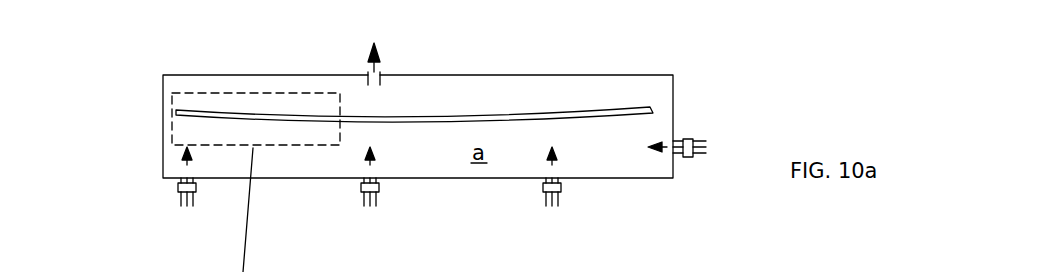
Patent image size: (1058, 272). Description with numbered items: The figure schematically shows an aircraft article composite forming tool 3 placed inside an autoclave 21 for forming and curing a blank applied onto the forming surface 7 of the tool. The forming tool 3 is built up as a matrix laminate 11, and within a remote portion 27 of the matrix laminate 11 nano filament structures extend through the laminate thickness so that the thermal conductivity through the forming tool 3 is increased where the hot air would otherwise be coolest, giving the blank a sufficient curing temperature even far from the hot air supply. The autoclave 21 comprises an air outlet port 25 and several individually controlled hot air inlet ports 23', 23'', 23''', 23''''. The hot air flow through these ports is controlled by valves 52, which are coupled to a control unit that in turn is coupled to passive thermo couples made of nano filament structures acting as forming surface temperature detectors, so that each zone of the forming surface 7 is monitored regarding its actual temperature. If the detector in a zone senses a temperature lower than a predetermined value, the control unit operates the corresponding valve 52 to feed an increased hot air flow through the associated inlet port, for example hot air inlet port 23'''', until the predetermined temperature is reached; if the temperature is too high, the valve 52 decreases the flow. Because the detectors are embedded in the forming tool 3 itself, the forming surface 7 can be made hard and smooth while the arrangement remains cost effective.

The aircraft article composite forming tool 3 is at (130, 108).
The forming surface 7 is at (435, 117).
The matrix laminate 11 is at (532, 118).
The autoclave 21 is at (470, 74).
The hot air inlet port 23' is at (685, 120).
The hot air inlet port 23'' is at (580, 192).
The hot air inlet port 23''' is at (405, 190).
The hot air inlet port 23'''' is at (210, 200).
The air outlet port 25 is at (363, 73).
The remote portion 27 is at (225, 100).
The valve 52 is at (175, 193).